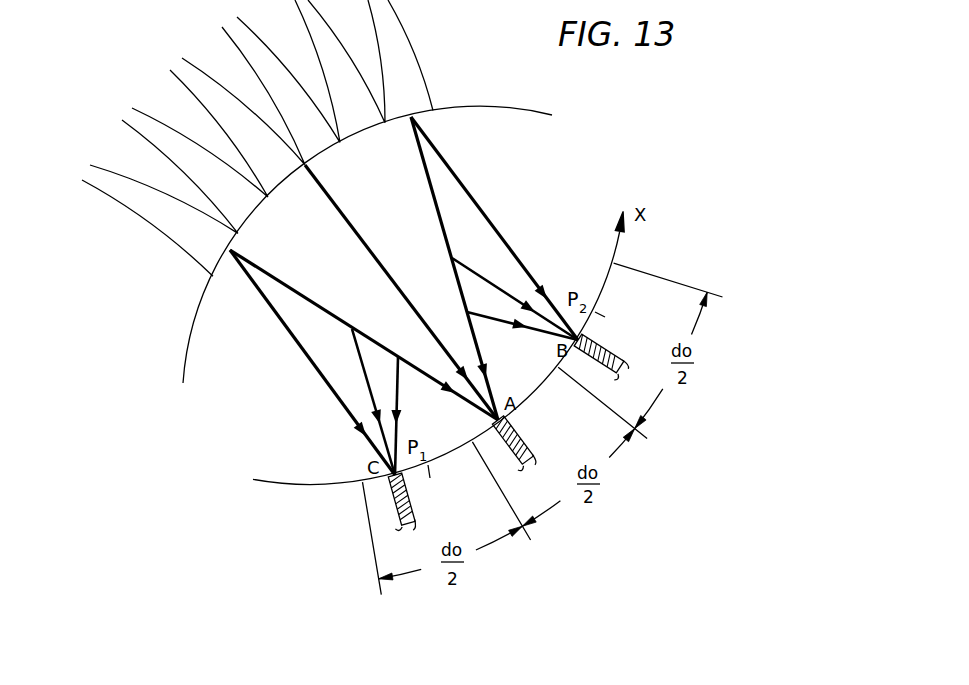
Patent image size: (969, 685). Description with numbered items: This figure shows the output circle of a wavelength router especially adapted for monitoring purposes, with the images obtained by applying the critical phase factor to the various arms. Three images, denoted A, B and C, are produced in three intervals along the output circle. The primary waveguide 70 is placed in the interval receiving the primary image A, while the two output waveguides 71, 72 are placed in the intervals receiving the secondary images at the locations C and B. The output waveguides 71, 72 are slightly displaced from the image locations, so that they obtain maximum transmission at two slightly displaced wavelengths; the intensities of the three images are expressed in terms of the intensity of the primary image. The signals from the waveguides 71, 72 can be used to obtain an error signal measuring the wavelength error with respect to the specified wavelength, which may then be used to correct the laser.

The primary waveguide 70 is at (527, 440).
The output waveguide 71 is at (412, 508).
The output waveguide 72 is at (618, 350).